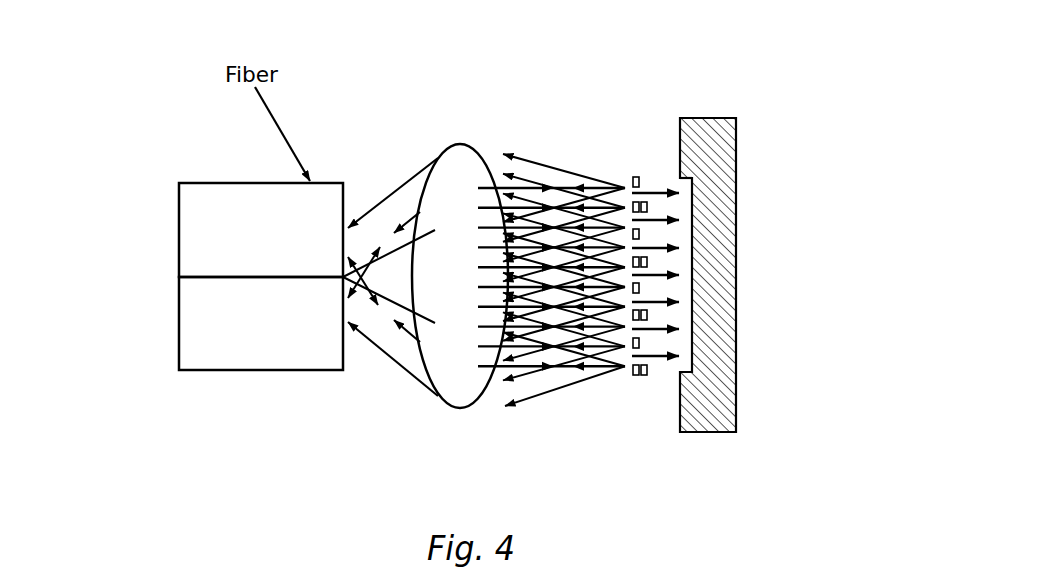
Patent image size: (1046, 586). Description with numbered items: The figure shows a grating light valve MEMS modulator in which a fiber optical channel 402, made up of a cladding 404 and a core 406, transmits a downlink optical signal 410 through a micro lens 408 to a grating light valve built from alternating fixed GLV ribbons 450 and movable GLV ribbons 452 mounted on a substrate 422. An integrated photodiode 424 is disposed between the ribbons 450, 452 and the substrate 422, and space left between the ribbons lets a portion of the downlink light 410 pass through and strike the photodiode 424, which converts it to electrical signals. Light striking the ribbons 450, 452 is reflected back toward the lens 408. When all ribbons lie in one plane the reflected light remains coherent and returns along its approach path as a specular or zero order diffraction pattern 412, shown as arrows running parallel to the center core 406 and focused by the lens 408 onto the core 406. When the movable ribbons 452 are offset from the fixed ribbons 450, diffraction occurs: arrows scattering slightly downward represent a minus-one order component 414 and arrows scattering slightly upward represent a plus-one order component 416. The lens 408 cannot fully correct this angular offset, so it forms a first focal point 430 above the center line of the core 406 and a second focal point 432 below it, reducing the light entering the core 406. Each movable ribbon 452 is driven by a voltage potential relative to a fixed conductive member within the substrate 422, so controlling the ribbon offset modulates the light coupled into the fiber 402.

The fiber optical channel 402 is at (133, 170).
The cladding 404 is at (194, 238).
The core 406 is at (178, 277).
The micro lens 408 is at (445, 139).
The downlink optical signal 410 is at (378, 308).
The zero order diffraction pattern 412 is at (579, 369).
The -1 order diffractive component 414 is at (503, 414).
The +1 order diffractive component 416 is at (502, 139).
The substrate 422 is at (679, 112).
The integrated photodiode 424 is at (672, 181).
The first focal point 430 is at (341, 243).
The second focal point 432 is at (343, 312).
The fixed GLV ribbons 450 is at (647, 287).
The movable GLV ribbons 452 is at (647, 370).